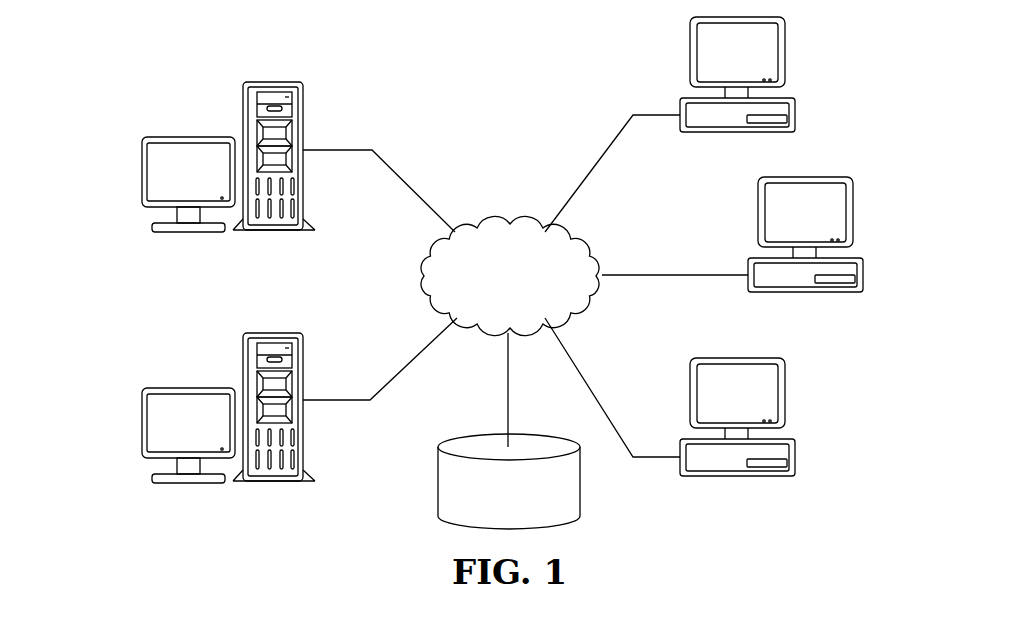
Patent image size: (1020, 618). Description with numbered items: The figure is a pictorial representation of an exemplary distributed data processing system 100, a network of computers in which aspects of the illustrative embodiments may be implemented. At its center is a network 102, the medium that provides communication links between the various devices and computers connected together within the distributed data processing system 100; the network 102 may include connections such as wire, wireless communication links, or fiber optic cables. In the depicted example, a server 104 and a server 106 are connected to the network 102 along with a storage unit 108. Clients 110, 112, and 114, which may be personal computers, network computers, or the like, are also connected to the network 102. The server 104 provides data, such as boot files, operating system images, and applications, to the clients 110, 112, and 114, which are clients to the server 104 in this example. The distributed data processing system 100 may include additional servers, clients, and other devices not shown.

The distributed data processing system 100 is at (379, 75).
The network 102 is at (483, 223).
The server 104 is at (142, 172).
The server 106 is at (142, 423).
The storage unit 108 is at (438, 480).
The client 110 is at (795, 107).
The client 112 is at (863, 280).
The client 114 is at (795, 465).